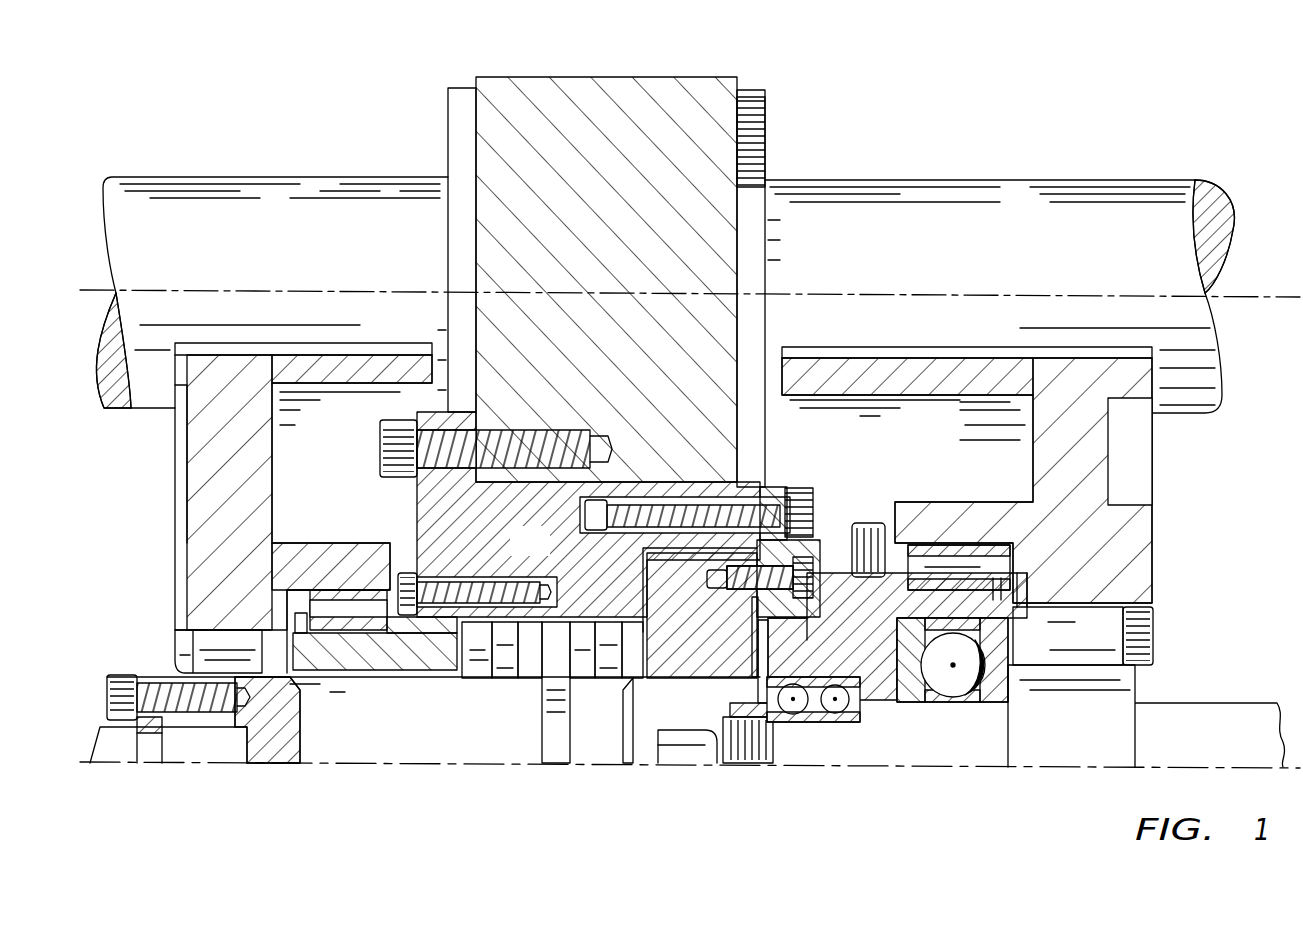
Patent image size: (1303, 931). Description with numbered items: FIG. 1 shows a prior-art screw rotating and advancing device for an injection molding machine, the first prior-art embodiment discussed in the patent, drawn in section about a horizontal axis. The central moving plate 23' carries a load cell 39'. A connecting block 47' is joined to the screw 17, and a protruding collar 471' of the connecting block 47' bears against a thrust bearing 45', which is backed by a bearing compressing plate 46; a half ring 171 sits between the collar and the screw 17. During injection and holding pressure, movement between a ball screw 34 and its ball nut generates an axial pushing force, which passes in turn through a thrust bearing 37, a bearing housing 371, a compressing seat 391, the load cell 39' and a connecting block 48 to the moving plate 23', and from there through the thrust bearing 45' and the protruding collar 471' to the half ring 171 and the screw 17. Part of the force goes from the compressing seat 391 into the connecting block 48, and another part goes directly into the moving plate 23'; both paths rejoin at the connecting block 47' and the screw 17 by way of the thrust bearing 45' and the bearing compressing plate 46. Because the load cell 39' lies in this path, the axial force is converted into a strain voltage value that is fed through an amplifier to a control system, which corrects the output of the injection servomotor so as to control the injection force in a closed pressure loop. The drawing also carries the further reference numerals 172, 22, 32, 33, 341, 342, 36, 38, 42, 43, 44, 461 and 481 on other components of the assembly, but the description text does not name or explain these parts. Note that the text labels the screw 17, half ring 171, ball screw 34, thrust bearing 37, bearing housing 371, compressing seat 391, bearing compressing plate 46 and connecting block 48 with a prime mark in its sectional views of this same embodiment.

The screw 17 is at (107, 750).
The half ring 171 is at (150, 745).
The bolt 172 is at (130, 680).
The shaft 22 is at (181, 188).
The moving plate 23' is at (606, 243).
The housing 32 is at (1003, 360).
The adjusting screw 33 is at (1090, 612).
The ball screw 34 is at (1210, 700).
The plate 341 is at (757, 720).
The seat 342 is at (700, 745).
The sleeve 36 is at (948, 545).
The thrust bearing 37 is at (990, 675).
The bearing housing 371 is at (890, 700).
The bearing 38 is at (830, 725).
The load cell 39' is at (690, 683).
The compressing seat 391 is at (810, 700).
The housing 42 is at (232, 360).
The ring 43 is at (213, 630).
The ring 44 is at (343, 590).
The thrust bearing 45' is at (552, 726).
The bearing compressing plate 46 is at (333, 670).
The bolt 461 is at (437, 603).
The connecting block 47' is at (267, 756).
The protruding collar 471' is at (546, 738).
The connecting block 48 is at (603, 514).
The bolt 481 is at (470, 430).